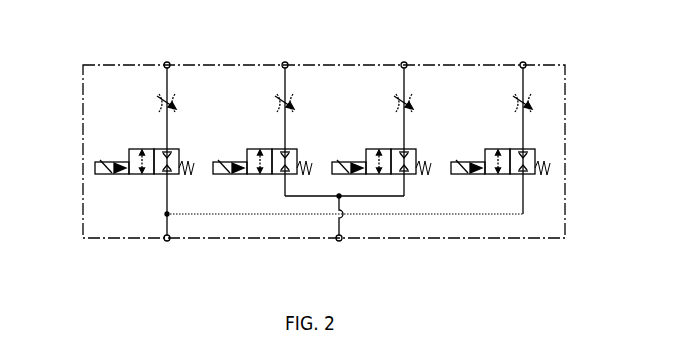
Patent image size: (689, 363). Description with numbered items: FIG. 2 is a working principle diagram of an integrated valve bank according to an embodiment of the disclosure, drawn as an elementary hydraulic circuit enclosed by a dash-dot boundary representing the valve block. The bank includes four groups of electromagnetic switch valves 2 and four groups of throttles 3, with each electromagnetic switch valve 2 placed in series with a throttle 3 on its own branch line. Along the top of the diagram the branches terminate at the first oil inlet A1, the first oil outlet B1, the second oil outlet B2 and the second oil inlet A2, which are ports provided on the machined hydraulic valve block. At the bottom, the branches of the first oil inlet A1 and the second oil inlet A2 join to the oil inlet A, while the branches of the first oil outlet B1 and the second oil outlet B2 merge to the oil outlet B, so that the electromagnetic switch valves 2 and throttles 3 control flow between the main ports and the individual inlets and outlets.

The electromagnetic switch valve 2 is at (105, 165).
The throttle 3 is at (174, 107).
The first oil inlet A1 is at (167, 55).
The first oil outlet B1 is at (285, 55).
The second oil outlet B2 is at (404, 55).
The second oil inlet A2 is at (523, 55).
The oil inlet A is at (167, 248).
The oil outlet B is at (339, 248).